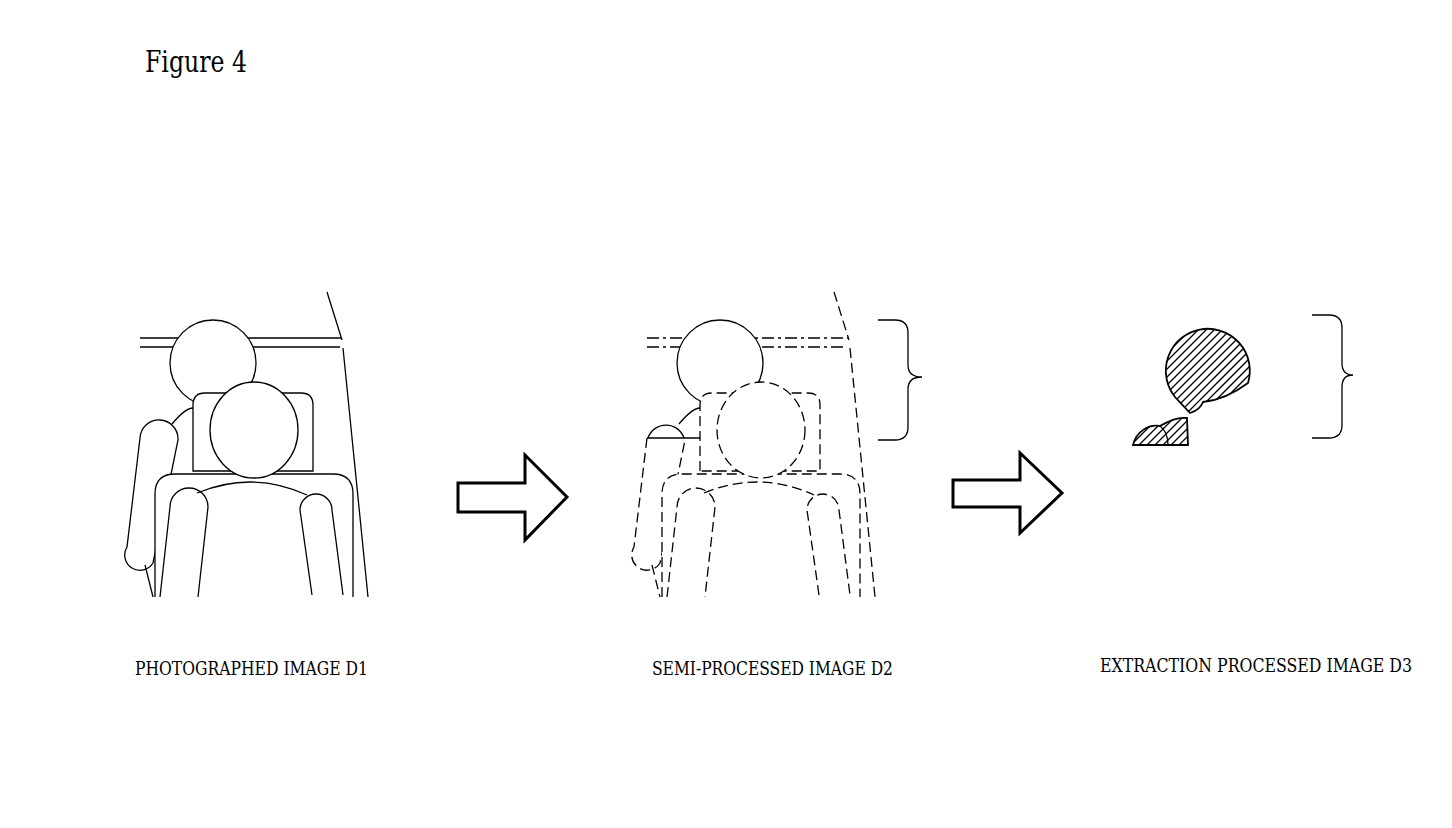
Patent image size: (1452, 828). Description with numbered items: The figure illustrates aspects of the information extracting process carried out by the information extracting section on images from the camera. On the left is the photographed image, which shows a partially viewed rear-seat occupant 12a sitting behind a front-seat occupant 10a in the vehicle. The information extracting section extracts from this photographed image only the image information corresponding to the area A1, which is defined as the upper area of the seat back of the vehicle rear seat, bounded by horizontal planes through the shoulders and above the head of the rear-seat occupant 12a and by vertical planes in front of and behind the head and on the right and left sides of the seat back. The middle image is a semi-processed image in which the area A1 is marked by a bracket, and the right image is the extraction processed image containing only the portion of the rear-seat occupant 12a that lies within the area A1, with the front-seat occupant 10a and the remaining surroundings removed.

The rear-seat occupant 12a is at (221, 312).
The front-seat occupant 10a is at (281, 376).
The area A1 is at (1139, 377).